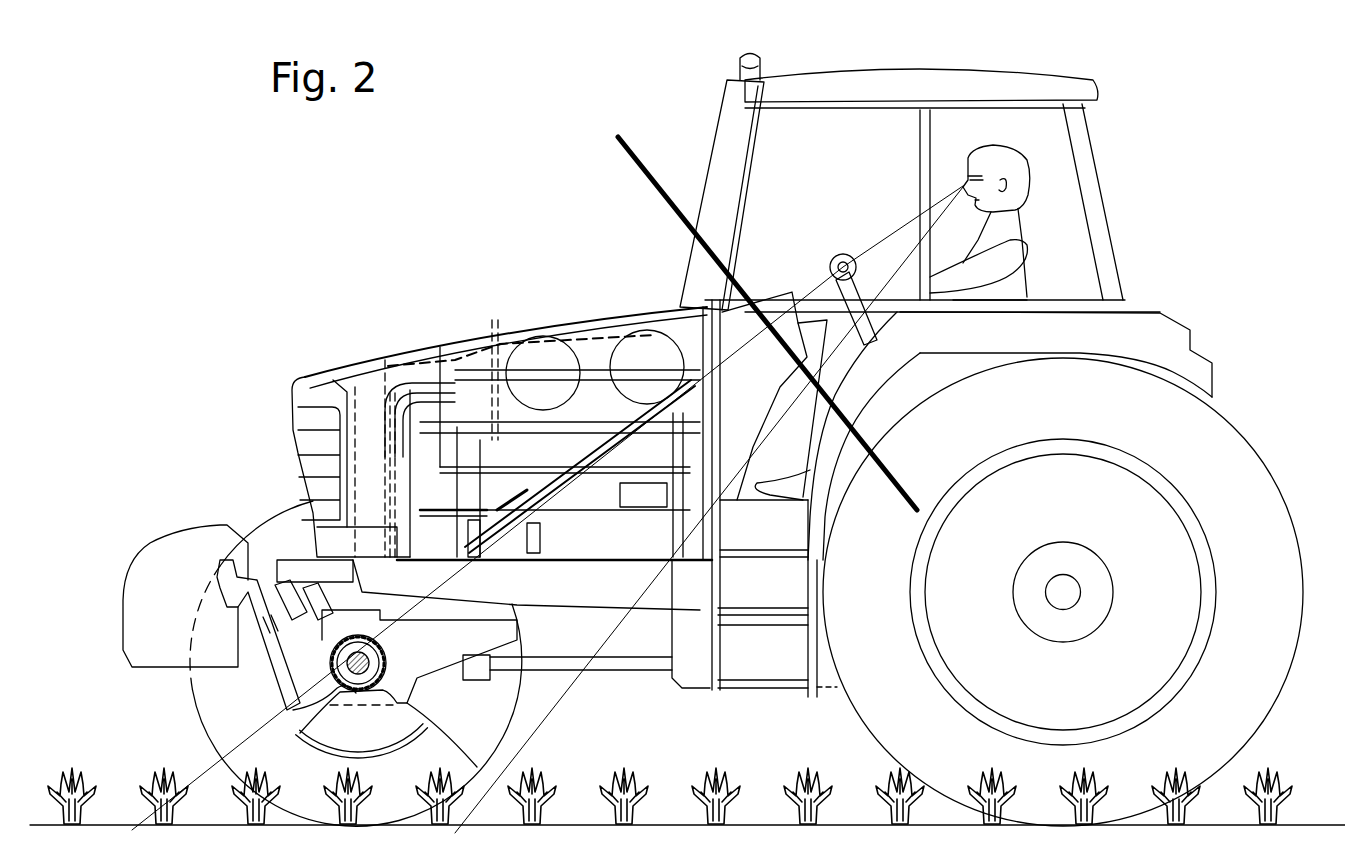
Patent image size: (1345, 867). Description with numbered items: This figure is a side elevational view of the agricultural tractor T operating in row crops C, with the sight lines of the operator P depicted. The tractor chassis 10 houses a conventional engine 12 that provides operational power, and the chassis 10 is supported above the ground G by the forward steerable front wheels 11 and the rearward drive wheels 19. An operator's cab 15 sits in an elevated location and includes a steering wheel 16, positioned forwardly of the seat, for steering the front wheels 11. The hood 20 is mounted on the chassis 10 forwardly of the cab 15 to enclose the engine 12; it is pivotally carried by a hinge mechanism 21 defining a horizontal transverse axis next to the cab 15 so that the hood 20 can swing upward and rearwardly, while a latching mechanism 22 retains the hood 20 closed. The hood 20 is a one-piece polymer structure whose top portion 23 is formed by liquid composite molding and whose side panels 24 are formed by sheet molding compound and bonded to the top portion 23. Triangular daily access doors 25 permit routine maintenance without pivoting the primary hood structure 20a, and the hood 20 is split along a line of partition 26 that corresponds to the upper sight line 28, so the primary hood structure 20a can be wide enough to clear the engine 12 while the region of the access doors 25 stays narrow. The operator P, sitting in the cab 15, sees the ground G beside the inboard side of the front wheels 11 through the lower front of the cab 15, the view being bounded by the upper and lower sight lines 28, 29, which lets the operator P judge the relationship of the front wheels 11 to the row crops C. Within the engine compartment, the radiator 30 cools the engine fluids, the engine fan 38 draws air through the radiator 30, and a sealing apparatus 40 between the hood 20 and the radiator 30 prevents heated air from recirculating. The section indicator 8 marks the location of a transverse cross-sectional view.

The tractor T is at (1210, 97).
The operator P is at (1015, 208).
The ground G is at (1300, 827).
The row crops C is at (135, 775).
The section line 8- 8 is at (600, 181).
The tractor chassis 10 is at (657, 598).
The front wheels 11 is at (210, 683).
The engine 12 is at (598, 540).
The operator's cab 15 is at (1107, 233).
The steering wheel 16 is at (830, 266).
The rearward drive wheels 19 is at (1264, 469).
The hood 20 is at (270, 417).
The primary hood structure 20a is at (302, 390).
The hinge mechanism 21 is at (697, 320).
The latching mechanism 22 is at (500, 345).
The top portion 23 is at (385, 362).
The side panels 24 is at (365, 455).
The daily access doors 25 is at (553, 562).
The line of partition 26 is at (655, 560).
The upper sight line 28 is at (320, 722).
The lower sight line 29 is at (547, 720).
The radiator 30 is at (382, 392).
The engine fan 38 is at (440, 345).
The sealing apparatus 40 is at (372, 353).